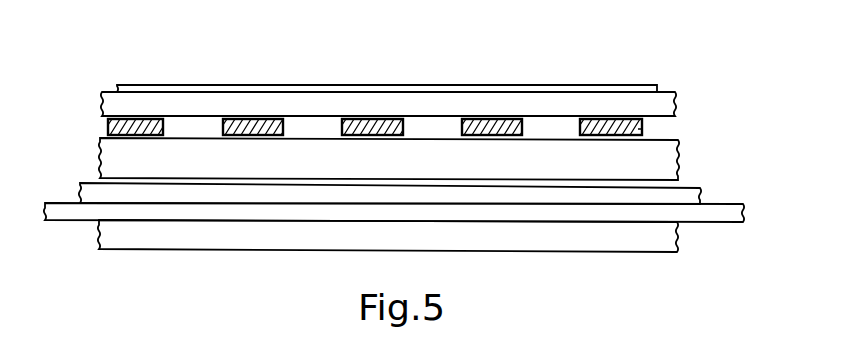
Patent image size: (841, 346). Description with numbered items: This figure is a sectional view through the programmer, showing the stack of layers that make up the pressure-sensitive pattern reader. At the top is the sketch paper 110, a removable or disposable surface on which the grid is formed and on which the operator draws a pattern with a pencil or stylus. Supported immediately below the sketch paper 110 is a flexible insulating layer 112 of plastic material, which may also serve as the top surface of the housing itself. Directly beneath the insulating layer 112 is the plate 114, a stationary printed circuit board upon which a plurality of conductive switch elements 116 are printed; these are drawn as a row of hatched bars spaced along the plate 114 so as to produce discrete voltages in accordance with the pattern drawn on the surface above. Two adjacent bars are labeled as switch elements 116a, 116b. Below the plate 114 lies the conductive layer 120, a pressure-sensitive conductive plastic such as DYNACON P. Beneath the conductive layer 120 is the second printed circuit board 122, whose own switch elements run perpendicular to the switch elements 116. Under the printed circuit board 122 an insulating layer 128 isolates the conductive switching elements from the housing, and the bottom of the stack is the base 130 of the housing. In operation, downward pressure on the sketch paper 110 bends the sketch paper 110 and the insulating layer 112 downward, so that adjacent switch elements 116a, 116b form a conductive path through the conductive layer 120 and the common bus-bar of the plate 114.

The sketch paper 110 is at (632, 93).
The insulating layer 112 is at (663, 102).
The plate 114 is at (560, 130).
The switch elements 116 is at (108, 128).
The switch element 116a is at (370, 126).
The switch element 116b is at (495, 128).
The conductive layer 120 is at (666, 163).
The printed circuit board 122 is at (690, 197).
The insulating layer 128 is at (730, 215).
The base 130 is at (665, 242).